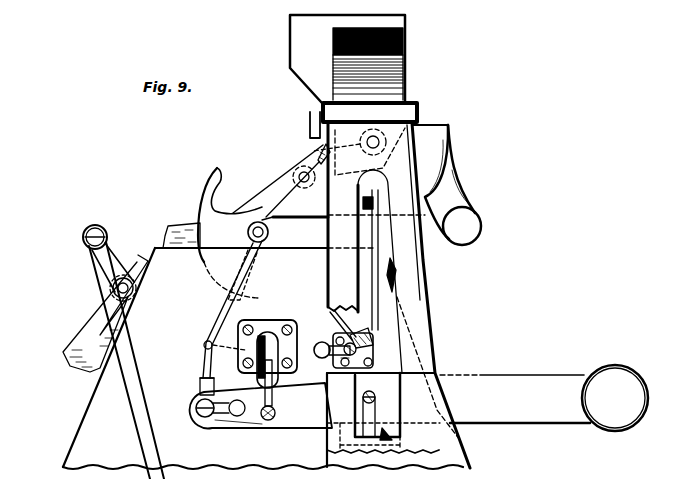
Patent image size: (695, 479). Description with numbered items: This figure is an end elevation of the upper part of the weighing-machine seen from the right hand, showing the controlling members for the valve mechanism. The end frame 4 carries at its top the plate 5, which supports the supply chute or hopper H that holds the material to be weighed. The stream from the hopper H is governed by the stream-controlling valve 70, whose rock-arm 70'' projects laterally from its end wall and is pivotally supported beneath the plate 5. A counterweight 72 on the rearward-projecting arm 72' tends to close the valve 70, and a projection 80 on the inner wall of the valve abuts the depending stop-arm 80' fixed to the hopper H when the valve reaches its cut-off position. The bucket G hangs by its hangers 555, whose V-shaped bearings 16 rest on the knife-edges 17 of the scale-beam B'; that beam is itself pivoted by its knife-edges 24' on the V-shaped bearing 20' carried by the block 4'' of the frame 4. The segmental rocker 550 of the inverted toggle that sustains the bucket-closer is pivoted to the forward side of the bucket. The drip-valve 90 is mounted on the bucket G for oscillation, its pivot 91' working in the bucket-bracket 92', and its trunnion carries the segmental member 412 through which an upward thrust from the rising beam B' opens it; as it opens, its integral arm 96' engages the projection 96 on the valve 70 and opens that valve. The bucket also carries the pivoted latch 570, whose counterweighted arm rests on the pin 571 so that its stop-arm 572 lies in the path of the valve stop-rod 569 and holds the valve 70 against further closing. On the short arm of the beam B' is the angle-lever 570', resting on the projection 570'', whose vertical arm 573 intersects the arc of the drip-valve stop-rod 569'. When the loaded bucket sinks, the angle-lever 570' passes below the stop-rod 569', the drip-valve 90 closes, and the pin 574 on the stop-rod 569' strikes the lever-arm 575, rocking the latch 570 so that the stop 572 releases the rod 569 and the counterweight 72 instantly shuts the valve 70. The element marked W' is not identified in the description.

The supply chute or hopper H is at (393, 22).
The plate or beam 5 is at (400, 112).
The depending stop-arm 80' is at (296, 125).
The projection 80 is at (302, 149).
The end frame 4 is at (399, 295).
The rock-arm 70'' is at (380, 142).
The stream-controlling valve 70 is at (443, 182).
The arm 72' is at (466, 187).
The counterweight 72 is at (470, 223).
The drip-valve 90 is at (198, 206).
The arm 96' is at (278, 181).
The projection 96 is at (303, 185).
The segmental member 412 is at (170, 230).
The bucket-bracket 92' is at (295, 230).
The pivot 91' is at (266, 245).
The segmental rocker 550 is at (90, 317).
The drip-valve stop-rod 569' is at (213, 309).
The lateral projection or pin 574 is at (203, 347).
The bucket G is at (187, 383).
The vertical arm 573 is at (202, 383).
The stop or pin 571 is at (318, 387).
The V-shaped bearings 16 is at (273, 397).
The angle-lever 570' is at (208, 423).
The projection 570'' is at (238, 437).
The knife-edges 17 is at (271, 421).
The hangers or brackets 555 is at (278, 308).
The lever-arm 575 is at (331, 315).
The latch or lever 570 is at (330, 362).
The stop-arm 572 is at (375, 346).
The valve stop-rod 569 is at (424, 349).
The block 4'' is at (383, 420).
The V-shaped bearing 20' is at (382, 417).
The knife-edges 24' is at (380, 389).
The scale-beam B' is at (515, 415).
The wheel W' is at (615, 410).